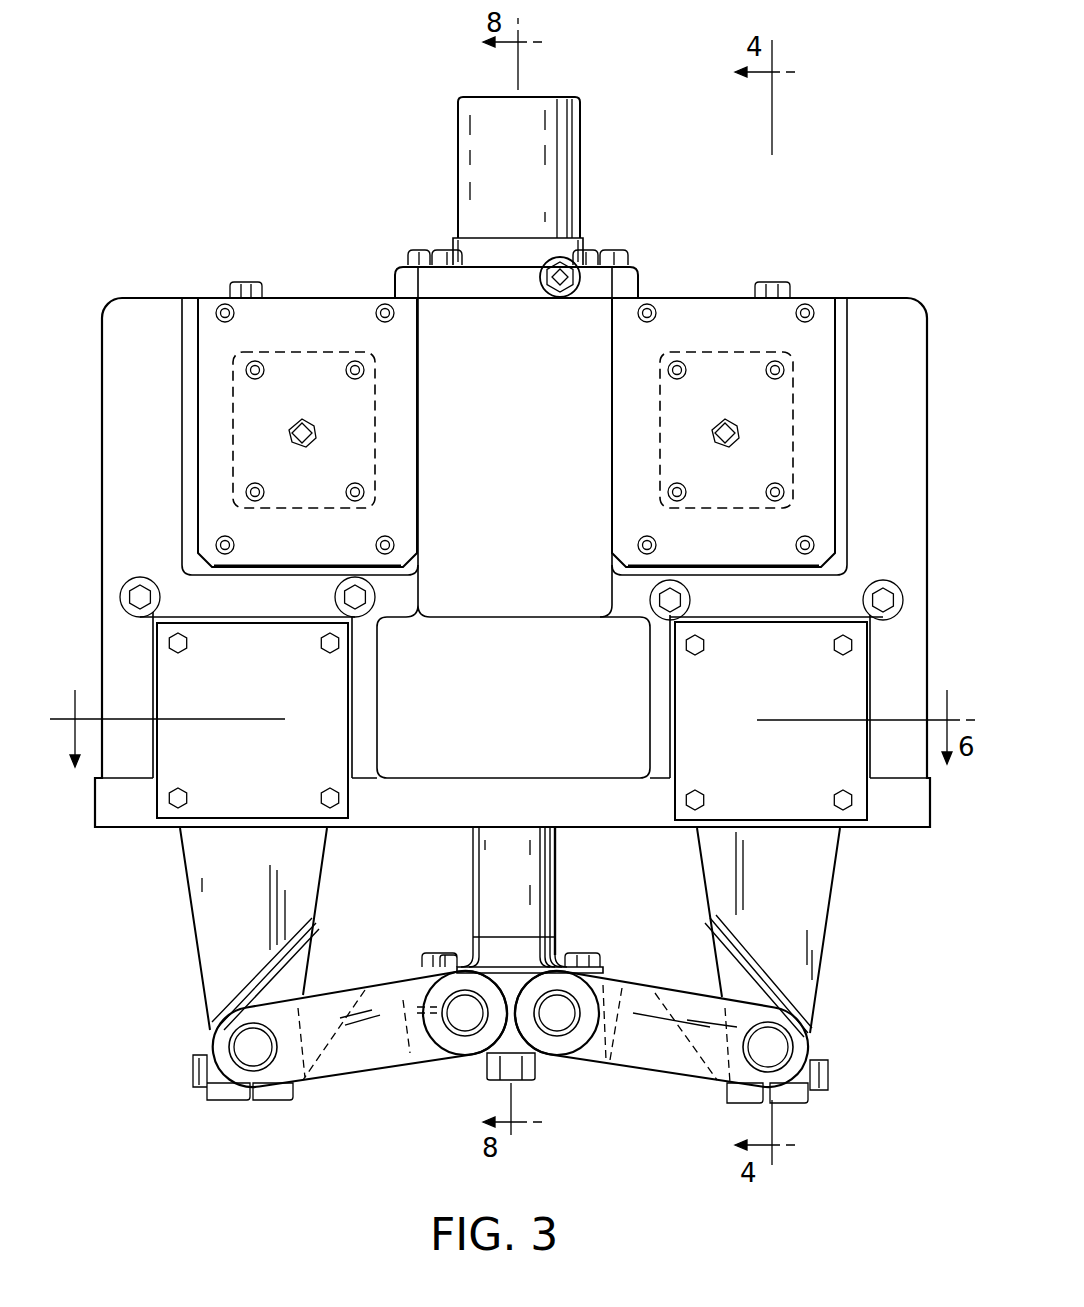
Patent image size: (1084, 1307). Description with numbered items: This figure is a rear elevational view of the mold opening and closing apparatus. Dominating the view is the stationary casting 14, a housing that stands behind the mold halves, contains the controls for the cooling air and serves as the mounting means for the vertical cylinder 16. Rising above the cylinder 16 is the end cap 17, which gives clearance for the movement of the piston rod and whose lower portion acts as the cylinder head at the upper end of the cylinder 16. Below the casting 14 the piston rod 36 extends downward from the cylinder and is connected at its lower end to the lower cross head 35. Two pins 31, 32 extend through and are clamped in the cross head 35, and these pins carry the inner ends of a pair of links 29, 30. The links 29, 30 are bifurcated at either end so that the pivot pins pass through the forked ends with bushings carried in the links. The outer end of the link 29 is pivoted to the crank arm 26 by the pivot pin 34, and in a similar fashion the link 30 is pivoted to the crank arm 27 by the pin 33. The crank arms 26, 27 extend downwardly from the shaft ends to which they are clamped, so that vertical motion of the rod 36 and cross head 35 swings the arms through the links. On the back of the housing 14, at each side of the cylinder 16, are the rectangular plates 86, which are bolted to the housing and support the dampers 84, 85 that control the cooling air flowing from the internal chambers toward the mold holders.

The stationary casting 14 is at (852, 783).
The vertical cylinder 16 is at (524, 433).
The end cap 17 is at (557, 143).
The crank arm 26 is at (263, 904).
The crank arm 27 is at (788, 901).
The link 29 is at (361, 1055).
The link 30 is at (650, 1050).
The pin 31 is at (465, 1014).
The pin 32 is at (555, 1016).
The pin 33 is at (768, 1050).
The pivot pin 34 is at (250, 1050).
The lower cross head 35 is at (522, 982).
The piston rod 36 is at (522, 852).
The damper 84 is at (800, 458).
The damper 85 is at (388, 455).
The rectangular plates 86 is at (297, 308).